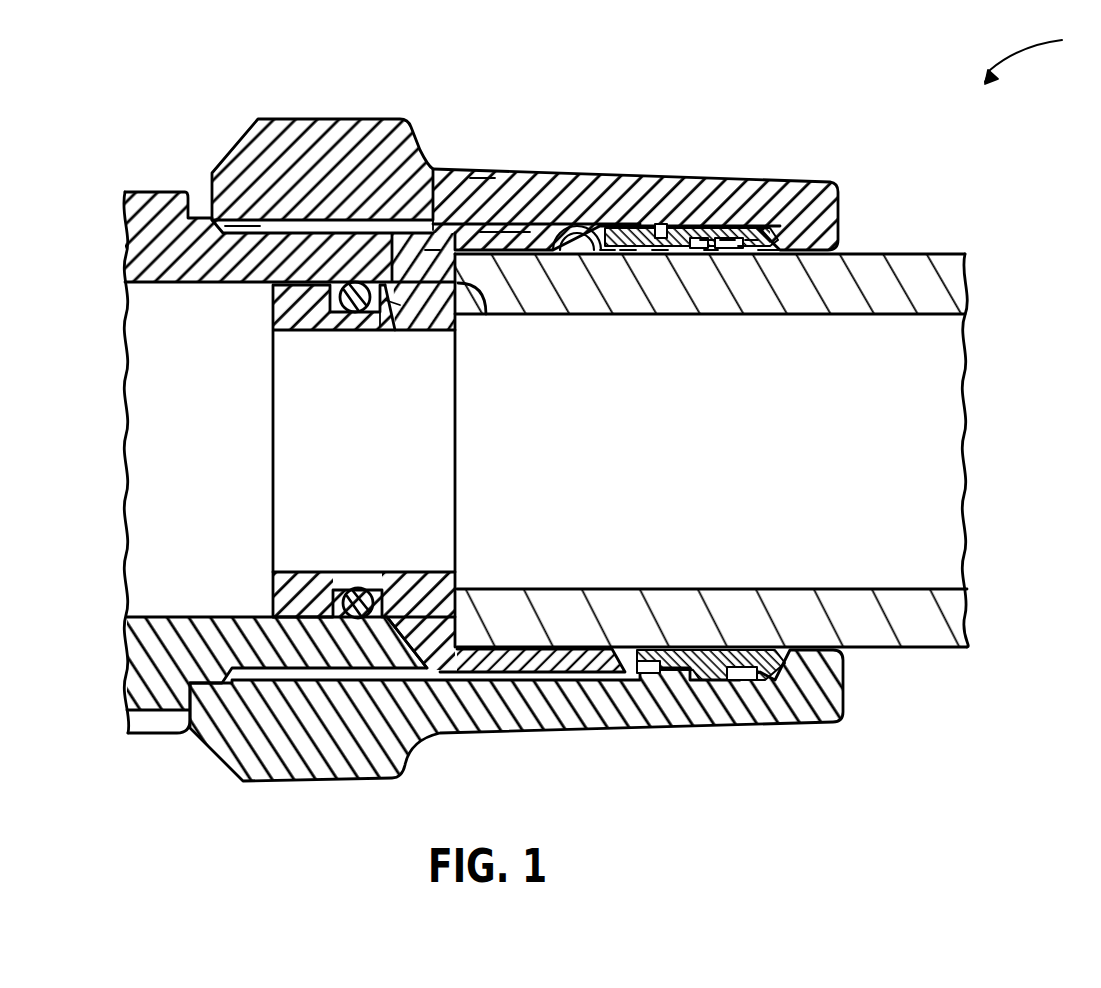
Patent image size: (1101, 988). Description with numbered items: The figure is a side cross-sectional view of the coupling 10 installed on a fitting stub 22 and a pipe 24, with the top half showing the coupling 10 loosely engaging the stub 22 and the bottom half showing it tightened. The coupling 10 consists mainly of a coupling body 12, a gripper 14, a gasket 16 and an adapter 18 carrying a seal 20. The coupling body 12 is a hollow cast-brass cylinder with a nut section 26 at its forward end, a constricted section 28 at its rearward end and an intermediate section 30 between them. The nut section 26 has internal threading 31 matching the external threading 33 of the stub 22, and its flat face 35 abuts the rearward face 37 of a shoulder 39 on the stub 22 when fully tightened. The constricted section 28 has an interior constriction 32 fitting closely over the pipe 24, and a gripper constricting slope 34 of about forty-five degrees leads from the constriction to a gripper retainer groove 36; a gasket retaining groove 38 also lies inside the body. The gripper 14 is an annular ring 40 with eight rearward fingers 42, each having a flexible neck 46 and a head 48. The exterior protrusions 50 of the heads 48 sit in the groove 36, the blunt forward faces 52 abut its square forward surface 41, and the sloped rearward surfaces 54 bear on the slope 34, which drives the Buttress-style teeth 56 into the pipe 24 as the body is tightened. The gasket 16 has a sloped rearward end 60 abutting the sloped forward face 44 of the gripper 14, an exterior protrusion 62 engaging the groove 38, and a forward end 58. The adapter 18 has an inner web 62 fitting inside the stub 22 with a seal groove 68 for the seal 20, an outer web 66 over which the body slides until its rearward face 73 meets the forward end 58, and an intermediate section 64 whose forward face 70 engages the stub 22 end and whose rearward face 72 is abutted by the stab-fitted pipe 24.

The coupling 10 is at (985, 84).
The coupling body 12 is at (542, 200).
The gripper 14 is at (655, 228).
The gasket 16 is at (607, 250).
The adapter 18 is at (437, 228).
The seal 20 is at (350, 288).
The fitting stub 22 is at (150, 226).
The pipe 24 is at (910, 280).
The nut section 26 is at (307, 150).
The constricted section 28 is at (840, 213).
The intermediate section 30 is at (480, 187).
The internal threading 31 is at (431, 254).
The interior constriction 32 is at (810, 252).
The external threading 33 is at (240, 222).
The gripper constricting slope 34 is at (778, 252).
The flat face 35 is at (211, 200).
The gripper retainer groove 36 is at (751, 242).
The rearward face 37 is at (200, 208).
The gasket retaining groove 38 is at (642, 242).
The shoulder 39 is at (172, 191).
The annular ring 40 is at (690, 253).
The square forward surface 41 is at (743, 245).
The fingers 42 is at (740, 252).
The sloped forward face 44 is at (627, 253).
The neck 46 is at (710, 253).
The head 48 is at (758, 228).
The exterior protrusions 50 is at (728, 242).
The blunt forward faces 52 is at (708, 242).
The sloped rearward surfaces 54 is at (768, 224).
The teeth 56 is at (764, 252).
The forward end 58 is at (542, 254).
The sloped rearward end 60 is at (660, 253).
The inner web 62 is at (607, 242).
The intermediate section 64 is at (433, 294).
The outer web 66 is at (505, 228).
The seal groove 68 is at (380, 326).
The forward face 70 is at (399, 312).
The rearward face 72 is at (477, 282).
The rearward face 73 is at (586, 256).